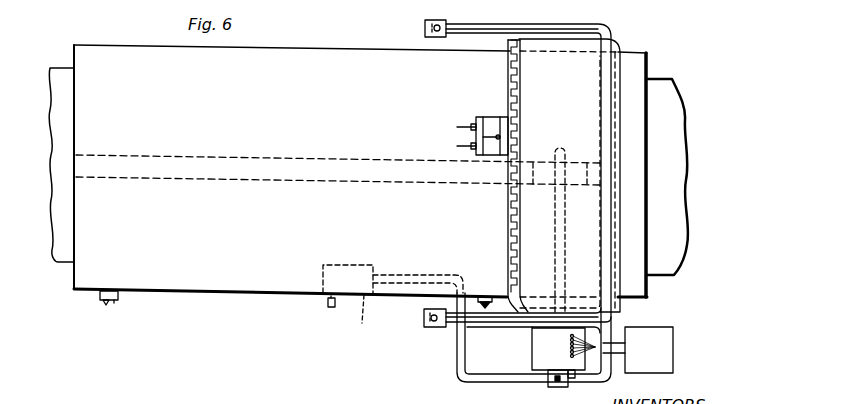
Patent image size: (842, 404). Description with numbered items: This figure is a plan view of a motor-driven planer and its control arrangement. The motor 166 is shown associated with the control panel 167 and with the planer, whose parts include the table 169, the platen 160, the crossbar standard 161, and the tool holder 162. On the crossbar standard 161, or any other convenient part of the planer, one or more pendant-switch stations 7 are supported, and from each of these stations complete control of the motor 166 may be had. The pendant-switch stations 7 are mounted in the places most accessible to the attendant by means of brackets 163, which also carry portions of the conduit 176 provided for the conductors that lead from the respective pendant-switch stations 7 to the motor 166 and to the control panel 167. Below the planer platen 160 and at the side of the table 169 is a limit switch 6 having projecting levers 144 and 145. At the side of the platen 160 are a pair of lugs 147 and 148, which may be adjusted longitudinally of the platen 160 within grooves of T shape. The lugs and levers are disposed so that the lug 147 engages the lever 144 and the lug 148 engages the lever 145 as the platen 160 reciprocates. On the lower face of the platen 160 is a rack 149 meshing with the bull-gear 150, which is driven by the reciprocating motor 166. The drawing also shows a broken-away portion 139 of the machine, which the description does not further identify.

The limit switch 6 is at (322, 272).
The pendant-switch station 7 is at (440, 22).
The casing 139 is at (684, 118).
The projecting lever 144 is at (331, 308).
The projecting lever 145 is at (367, 318).
The lug 147 is at (118, 303).
The lug 148 is at (483, 295).
The rack 149 is at (313, 183).
The bull-gear 150 is at (538, 166).
The platen 160 is at (300, 108).
The crossbar standard 161 is at (578, 70).
The tool holder 162 is at (475, 116).
The bracket 163 is at (537, 24).
The motor 166 is at (531, 355).
The control panel 167 is at (673, 352).
The table 169 is at (283, 2).
The conduit 176 is at (610, 328).